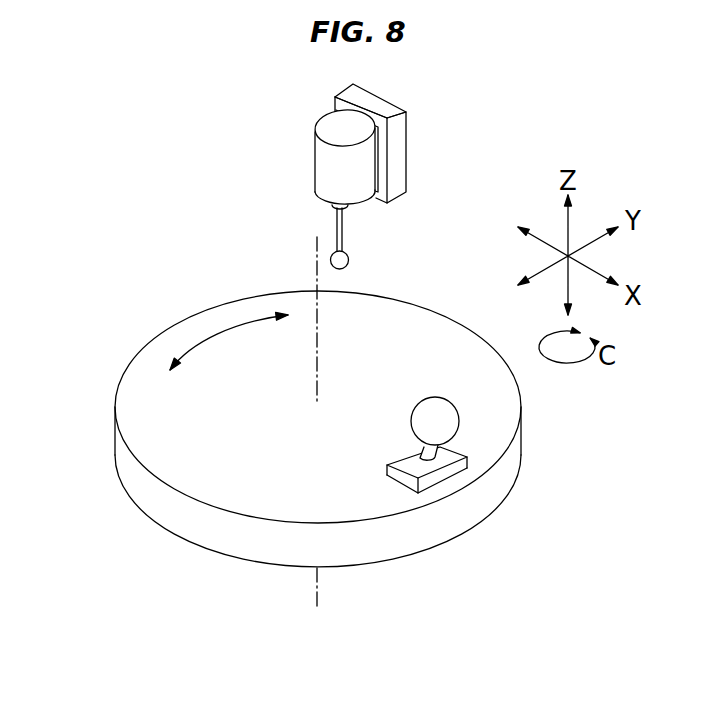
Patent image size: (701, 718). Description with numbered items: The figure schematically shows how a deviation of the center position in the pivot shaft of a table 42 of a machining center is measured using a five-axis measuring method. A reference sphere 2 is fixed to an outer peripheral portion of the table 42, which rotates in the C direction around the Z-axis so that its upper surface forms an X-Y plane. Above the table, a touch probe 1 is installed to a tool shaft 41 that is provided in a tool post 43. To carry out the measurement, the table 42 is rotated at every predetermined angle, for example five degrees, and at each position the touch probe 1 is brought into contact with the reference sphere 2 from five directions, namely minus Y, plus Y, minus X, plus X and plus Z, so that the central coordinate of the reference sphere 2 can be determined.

The touch probe 1 is at (345, 233).
The reference sphere 2 is at (422, 422).
The tool shaft 41 is at (334, 208).
The table 42 is at (222, 447).
The tool post 43 is at (393, 165).